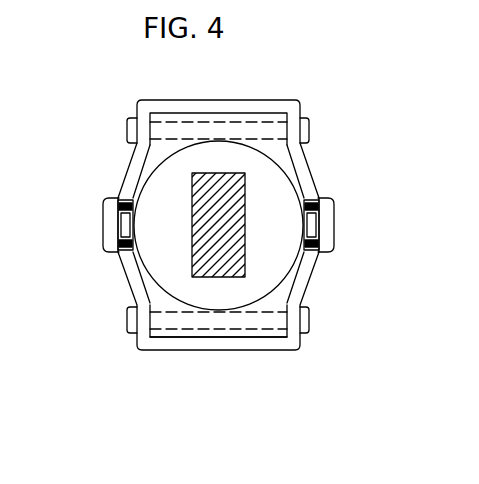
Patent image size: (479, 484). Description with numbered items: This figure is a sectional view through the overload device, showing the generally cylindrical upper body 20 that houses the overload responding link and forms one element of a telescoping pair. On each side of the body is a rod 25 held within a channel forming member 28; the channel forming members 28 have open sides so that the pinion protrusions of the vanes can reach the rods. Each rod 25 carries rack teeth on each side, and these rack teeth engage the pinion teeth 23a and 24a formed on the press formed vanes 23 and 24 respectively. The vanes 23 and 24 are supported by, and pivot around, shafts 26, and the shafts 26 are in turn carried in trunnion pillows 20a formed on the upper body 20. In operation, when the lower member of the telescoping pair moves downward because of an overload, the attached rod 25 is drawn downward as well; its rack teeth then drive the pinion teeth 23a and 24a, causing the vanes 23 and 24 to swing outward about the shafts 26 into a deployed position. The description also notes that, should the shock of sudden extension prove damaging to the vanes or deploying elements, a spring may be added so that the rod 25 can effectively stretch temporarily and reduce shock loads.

The upper body 20 is at (153, 257).
The trunnion pillows 20a is at (255, 132).
The vane 23 is at (138, 105).
The pinion teeth 23a is at (125, 197).
The vane 24 is at (138, 338).
The pinion teeth 24a is at (118, 255).
The rod 25 is at (115, 226).
The shafts 26 is at (309, 127).
The channel forming members 28 is at (117, 203).